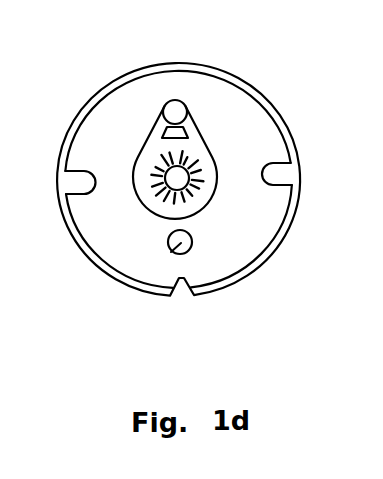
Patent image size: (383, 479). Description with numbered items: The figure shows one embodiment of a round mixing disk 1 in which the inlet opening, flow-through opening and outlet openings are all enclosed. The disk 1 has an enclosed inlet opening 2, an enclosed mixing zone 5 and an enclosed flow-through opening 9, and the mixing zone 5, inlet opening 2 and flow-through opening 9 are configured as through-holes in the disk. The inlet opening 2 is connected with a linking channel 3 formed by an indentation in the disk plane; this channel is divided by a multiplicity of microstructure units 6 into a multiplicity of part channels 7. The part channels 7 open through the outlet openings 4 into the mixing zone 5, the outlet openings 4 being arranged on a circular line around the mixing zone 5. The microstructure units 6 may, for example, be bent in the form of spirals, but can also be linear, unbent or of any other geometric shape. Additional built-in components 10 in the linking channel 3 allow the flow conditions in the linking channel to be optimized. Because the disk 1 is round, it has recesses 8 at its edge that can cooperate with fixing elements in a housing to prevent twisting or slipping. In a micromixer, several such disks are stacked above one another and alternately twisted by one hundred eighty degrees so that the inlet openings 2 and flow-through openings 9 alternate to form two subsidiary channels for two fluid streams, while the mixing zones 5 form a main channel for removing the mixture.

The disk 1 is at (108, 122).
The inlet opening 2 is at (171, 108).
The linking channel 3 is at (200, 156).
The outlet openings 4 is at (172, 174).
The mixing zone 5 is at (193, 198).
The microstructure units 6 is at (153, 203).
The part channels 7 is at (163, 205).
The recesses 8 is at (75, 181).
The flow-through opening 9 is at (171, 252).
The built-in components 10 is at (183, 131).